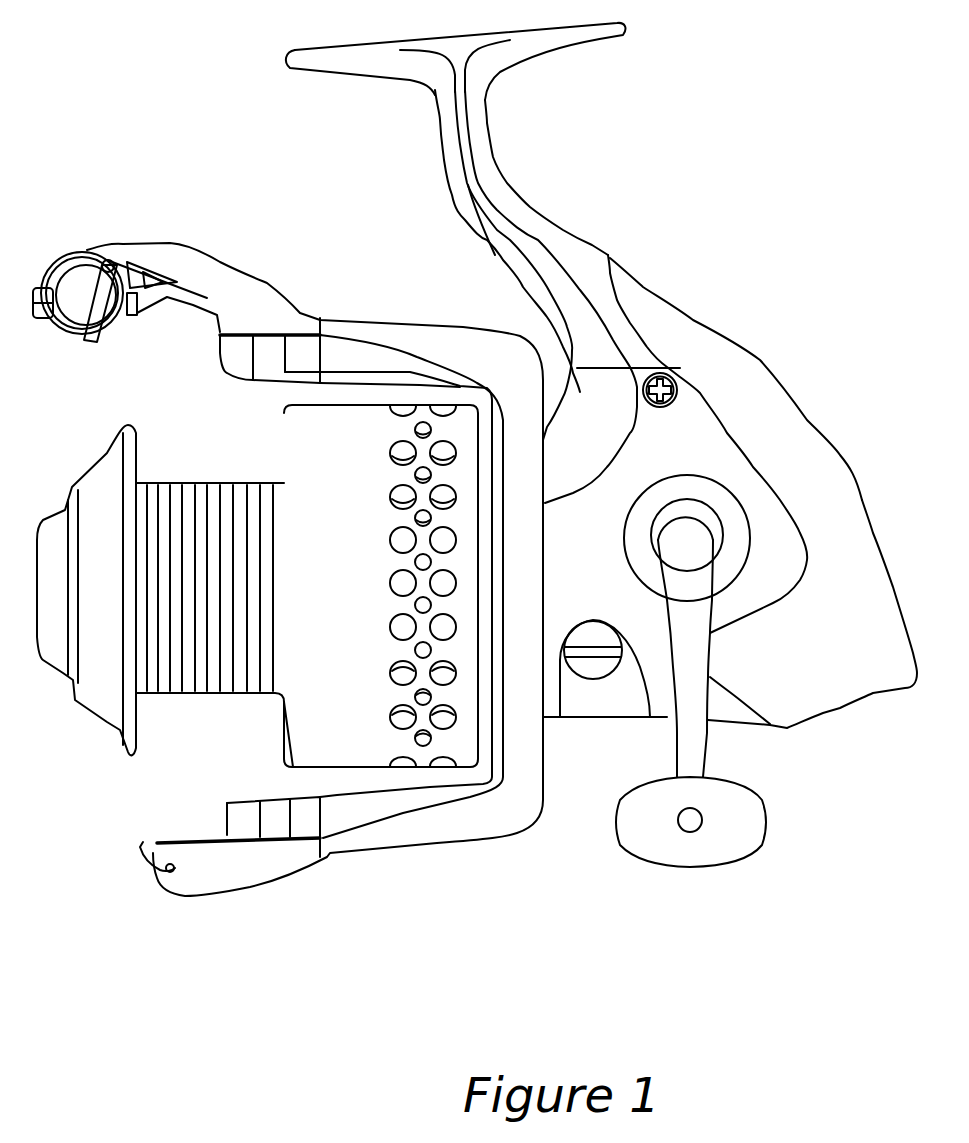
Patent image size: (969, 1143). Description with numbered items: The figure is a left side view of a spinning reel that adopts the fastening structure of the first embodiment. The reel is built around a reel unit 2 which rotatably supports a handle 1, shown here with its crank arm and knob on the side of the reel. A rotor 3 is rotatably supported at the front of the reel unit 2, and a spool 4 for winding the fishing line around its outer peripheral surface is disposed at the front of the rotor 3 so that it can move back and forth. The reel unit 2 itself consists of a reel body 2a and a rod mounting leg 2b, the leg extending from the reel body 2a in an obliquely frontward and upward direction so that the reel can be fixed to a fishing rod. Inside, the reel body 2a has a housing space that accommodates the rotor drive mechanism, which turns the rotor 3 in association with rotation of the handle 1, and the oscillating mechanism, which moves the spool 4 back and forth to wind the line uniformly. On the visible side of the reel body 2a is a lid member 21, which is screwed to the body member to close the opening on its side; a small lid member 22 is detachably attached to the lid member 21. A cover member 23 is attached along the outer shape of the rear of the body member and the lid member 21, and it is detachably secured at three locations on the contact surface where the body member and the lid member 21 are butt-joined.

The handle 1 is at (706, 752).
The reel unit 2 is at (601, 494).
The reel body 2a is at (607, 257).
The rod mounting leg 2b is at (488, 142).
The rotor 3 is at (503, 807).
The spool 4 is at (203, 677).
The lid member 21 is at (580, 392).
The small lid member 22 is at (598, 700).
The cover member 23 is at (860, 480).